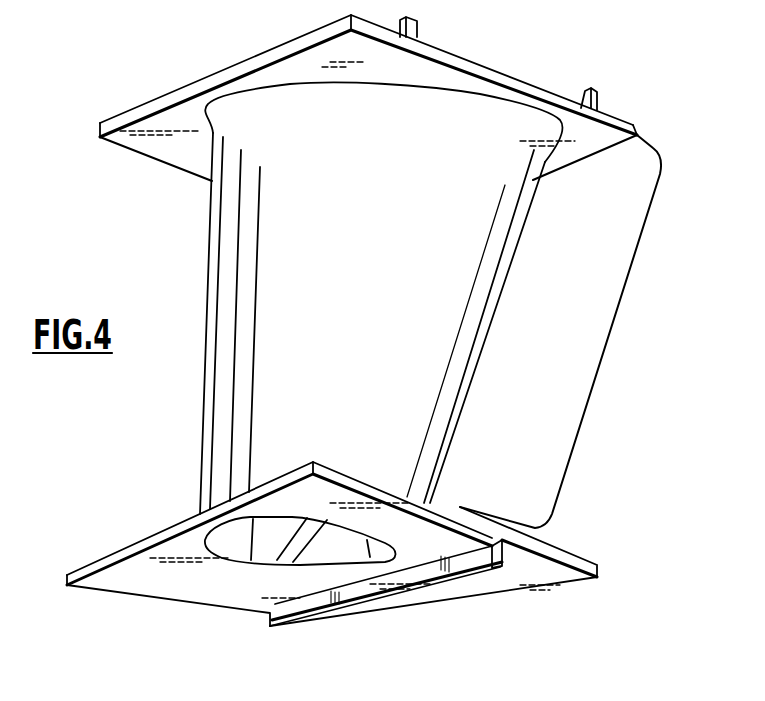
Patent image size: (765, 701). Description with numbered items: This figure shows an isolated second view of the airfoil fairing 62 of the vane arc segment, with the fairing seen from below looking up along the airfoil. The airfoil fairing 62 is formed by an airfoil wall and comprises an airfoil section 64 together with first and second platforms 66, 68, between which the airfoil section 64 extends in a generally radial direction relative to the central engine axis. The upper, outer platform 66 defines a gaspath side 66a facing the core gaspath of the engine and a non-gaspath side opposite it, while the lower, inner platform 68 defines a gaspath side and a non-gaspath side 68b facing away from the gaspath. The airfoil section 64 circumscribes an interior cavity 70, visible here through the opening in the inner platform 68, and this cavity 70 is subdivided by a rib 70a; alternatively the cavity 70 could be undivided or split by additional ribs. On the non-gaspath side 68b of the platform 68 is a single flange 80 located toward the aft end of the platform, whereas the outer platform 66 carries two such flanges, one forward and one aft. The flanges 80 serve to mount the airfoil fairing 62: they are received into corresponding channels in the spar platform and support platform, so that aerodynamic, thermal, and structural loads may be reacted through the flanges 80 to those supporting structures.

The airfoil fairing 62 is at (126, 416).
The airfoil section 64 is at (612, 345).
The first platform 66 is at (615, 116).
The gaspath side 66a is at (403, 65).
The second platform 68 is at (583, 567).
The non-gaspath side 68b is at (167, 573).
The interior cavity 70 is at (240, 550).
The rib 70a is at (289, 545).
The flange 80 is at (436, 568).